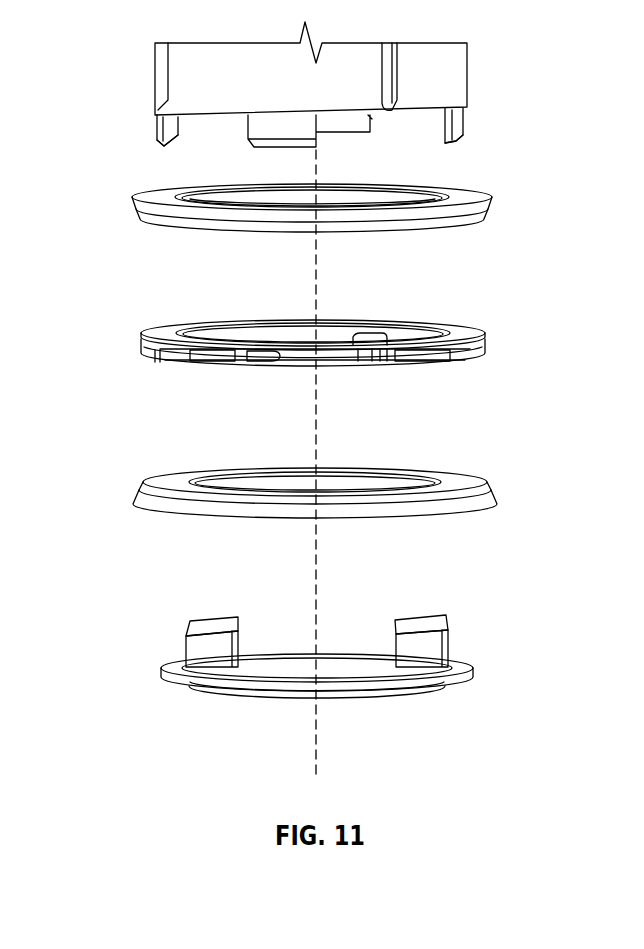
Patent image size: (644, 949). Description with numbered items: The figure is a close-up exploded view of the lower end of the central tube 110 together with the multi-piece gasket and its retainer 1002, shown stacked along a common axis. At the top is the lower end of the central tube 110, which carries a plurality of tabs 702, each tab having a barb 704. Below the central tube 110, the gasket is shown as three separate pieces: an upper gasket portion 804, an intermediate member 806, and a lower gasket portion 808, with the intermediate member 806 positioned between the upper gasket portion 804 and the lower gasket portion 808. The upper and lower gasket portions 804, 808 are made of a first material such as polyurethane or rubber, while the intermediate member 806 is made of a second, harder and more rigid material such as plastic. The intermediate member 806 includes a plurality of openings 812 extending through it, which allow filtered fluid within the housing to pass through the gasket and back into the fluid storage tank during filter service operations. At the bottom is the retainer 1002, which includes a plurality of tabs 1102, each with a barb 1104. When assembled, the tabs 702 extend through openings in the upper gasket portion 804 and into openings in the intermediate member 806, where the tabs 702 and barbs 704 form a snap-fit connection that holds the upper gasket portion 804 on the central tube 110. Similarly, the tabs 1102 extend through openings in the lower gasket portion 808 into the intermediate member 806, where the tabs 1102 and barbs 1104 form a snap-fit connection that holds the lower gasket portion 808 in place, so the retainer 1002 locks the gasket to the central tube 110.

The central tube 110 is at (165, 73).
The tab 702 is at (157, 123).
The barb 704 is at (156, 132).
The upper gasket portion 804 is at (455, 195).
The intermediate member 806 is at (465, 330).
The opening 812 is at (228, 355).
The lower gasket portion 808 is at (470, 478).
The retainer 1002 is at (465, 673).
The tab 1102 is at (188, 655).
The barb 1104 is at (190, 628).